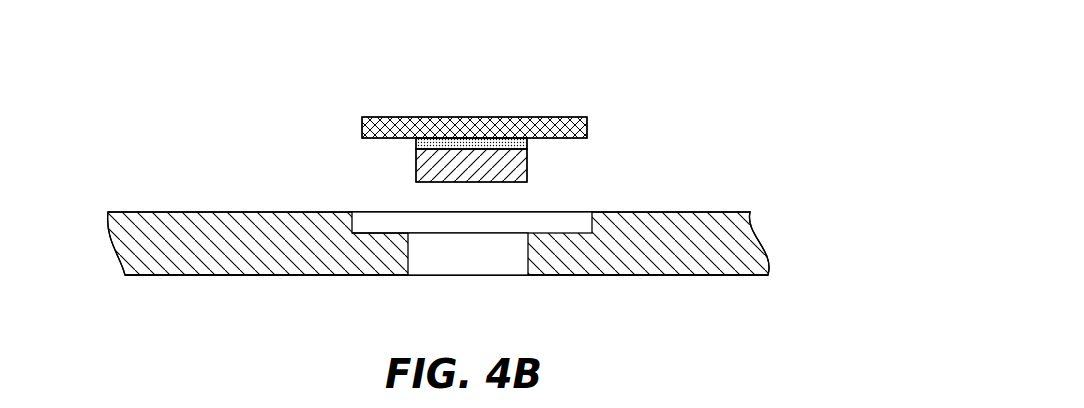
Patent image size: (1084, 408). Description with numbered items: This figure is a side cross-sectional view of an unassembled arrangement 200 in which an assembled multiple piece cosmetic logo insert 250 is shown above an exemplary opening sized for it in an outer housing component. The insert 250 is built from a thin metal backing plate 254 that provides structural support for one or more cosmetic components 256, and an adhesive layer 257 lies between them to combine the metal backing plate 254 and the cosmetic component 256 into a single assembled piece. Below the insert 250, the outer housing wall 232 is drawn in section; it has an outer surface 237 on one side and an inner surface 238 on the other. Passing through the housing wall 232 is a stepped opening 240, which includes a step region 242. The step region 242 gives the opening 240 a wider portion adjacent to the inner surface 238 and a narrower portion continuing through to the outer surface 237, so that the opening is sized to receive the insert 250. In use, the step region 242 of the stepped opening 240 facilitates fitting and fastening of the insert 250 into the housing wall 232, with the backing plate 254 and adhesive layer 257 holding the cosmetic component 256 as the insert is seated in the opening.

The unassembled arrangement 200 is at (712, 66).
The outer housing wall 232 is at (125, 243).
The outer surface 237 is at (218, 275).
The inner surface 238 is at (236, 212).
The stepped opening 240 is at (481, 283).
The step region 242 is at (382, 236).
The multiple piece insert 250 is at (353, 112).
The metal backing plate 254 is at (587, 132).
The cosmetic component 256 is at (521, 165).
The adhesive layer 257 is at (416, 143).